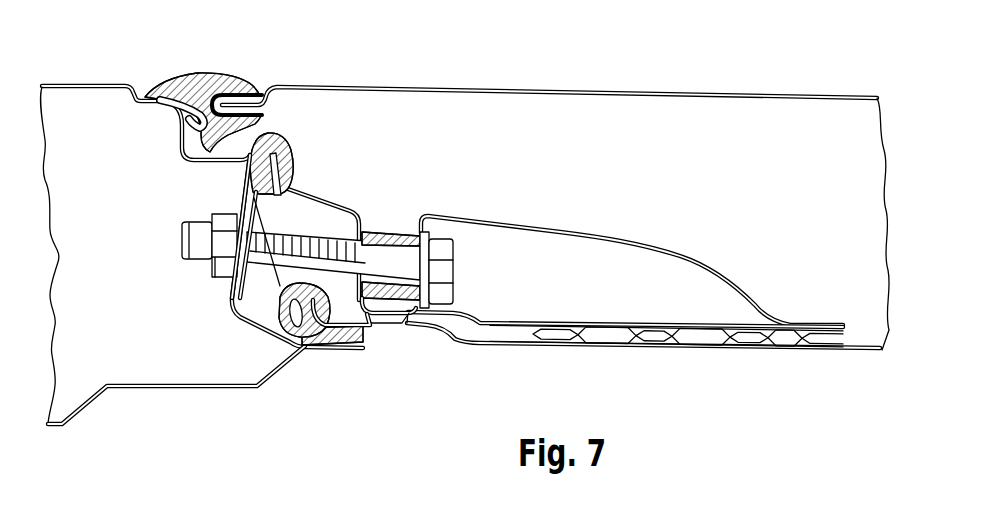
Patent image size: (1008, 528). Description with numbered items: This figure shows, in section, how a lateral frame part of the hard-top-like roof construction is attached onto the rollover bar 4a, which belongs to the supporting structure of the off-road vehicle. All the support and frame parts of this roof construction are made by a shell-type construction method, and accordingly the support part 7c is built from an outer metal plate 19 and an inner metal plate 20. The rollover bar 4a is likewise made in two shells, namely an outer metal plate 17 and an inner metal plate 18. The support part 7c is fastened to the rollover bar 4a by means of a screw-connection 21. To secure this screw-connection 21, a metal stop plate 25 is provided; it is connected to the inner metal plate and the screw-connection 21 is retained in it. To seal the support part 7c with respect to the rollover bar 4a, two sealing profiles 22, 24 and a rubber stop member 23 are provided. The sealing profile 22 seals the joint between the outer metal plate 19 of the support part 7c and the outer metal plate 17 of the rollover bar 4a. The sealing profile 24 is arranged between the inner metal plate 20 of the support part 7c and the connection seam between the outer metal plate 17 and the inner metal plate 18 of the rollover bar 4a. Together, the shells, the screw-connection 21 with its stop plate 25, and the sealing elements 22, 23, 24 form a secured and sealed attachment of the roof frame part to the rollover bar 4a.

The rollover bar 4a is at (62, 86).
The support part 7c is at (547, 92).
The outer metal plate 17 is at (85, 89).
The inner metal plate 18 is at (133, 382).
The outer metal plate 19 is at (407, 95).
The inner metal plate 20 is at (530, 338).
The screw-connection 21 is at (228, 283).
The sealing profile 22 is at (214, 74).
The rubber stop member 23 is at (288, 163).
The sealing profile 24 is at (363, 337).
The metal stop plate 25 is at (521, 226).